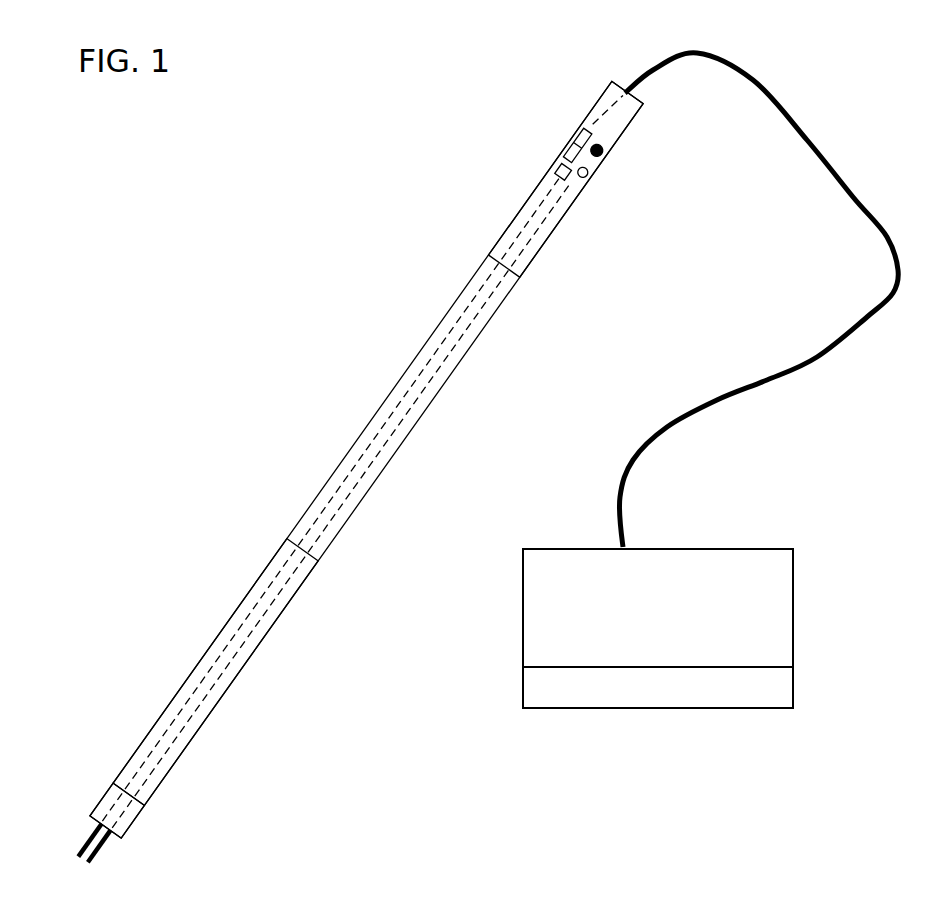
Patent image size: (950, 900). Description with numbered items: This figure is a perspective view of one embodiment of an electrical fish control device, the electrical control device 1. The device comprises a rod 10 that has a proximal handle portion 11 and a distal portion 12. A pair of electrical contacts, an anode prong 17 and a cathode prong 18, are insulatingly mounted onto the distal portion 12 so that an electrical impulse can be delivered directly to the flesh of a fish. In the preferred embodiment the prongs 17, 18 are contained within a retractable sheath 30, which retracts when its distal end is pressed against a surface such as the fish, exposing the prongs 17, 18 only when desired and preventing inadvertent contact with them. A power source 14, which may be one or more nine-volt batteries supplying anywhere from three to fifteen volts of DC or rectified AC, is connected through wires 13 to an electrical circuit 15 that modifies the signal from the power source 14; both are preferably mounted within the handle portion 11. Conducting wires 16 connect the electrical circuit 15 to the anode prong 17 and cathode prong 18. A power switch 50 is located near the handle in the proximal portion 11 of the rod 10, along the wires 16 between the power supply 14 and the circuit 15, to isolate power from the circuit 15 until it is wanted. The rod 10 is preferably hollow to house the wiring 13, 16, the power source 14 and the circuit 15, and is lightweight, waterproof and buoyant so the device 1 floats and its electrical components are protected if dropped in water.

The electrical control device 1 is at (502, 62).
The rod 10 is at (328, 322).
The proximal handle portion 11 is at (561, 221).
The distal portion 12 is at (117, 782).
The wires 13 is at (636, 452).
The power source 14 is at (658, 708).
The electrical circuit 15 is at (676, 548).
The conducting wires 16 is at (205, 683).
The anode prong 17 is at (77, 845).
The cathode prong 18 is at (93, 858).
The retractable sheath 30 is at (135, 823).
The power switch 50 is at (577, 152).